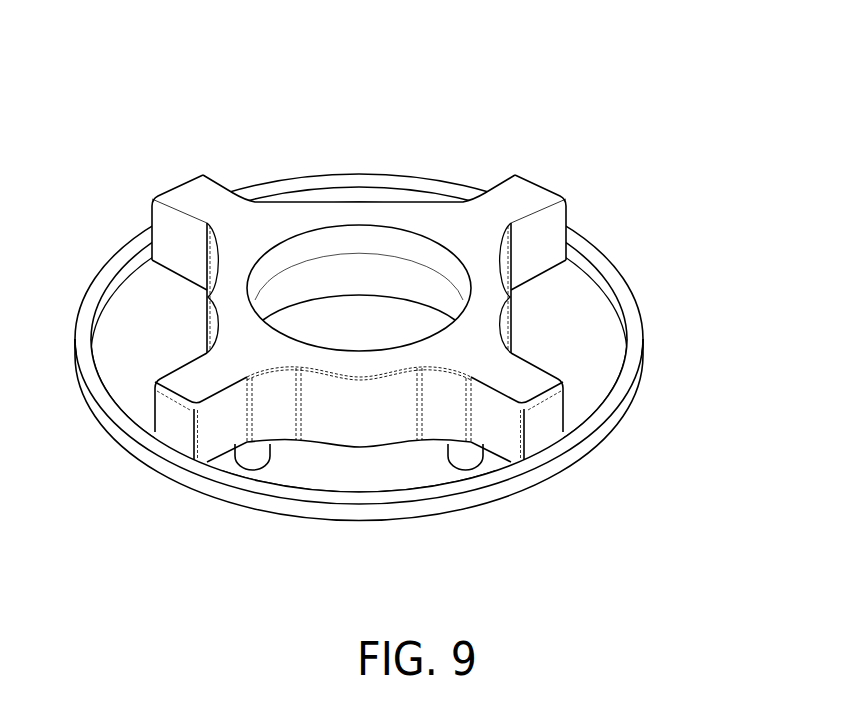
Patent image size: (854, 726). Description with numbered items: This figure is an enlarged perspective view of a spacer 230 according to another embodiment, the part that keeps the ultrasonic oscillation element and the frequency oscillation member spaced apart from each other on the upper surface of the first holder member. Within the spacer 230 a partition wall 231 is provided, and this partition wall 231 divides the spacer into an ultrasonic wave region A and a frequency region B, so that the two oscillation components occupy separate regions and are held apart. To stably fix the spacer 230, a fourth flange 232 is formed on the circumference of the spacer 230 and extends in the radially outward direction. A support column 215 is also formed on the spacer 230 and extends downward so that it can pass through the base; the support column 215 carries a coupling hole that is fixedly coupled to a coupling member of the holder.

The spacer 230 is at (356, 329).
The partition wall 231 is at (548, 231).
The fourth flange 232 is at (645, 318).
The support column 215 is at (252, 456).
The ultrasonic wave region A is at (350, 316).
The frequency region B is at (137, 333).